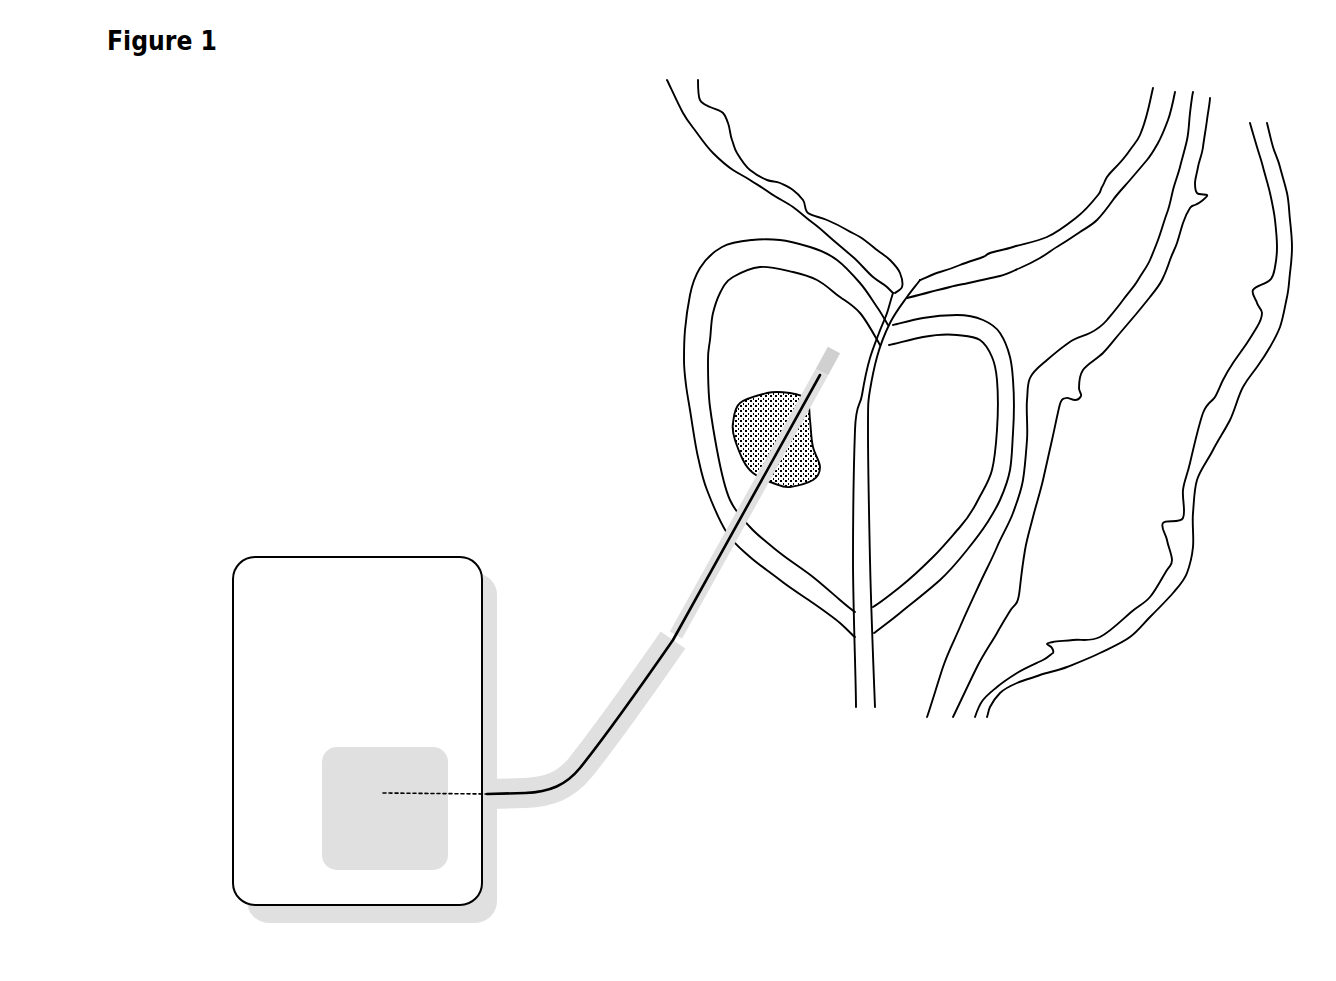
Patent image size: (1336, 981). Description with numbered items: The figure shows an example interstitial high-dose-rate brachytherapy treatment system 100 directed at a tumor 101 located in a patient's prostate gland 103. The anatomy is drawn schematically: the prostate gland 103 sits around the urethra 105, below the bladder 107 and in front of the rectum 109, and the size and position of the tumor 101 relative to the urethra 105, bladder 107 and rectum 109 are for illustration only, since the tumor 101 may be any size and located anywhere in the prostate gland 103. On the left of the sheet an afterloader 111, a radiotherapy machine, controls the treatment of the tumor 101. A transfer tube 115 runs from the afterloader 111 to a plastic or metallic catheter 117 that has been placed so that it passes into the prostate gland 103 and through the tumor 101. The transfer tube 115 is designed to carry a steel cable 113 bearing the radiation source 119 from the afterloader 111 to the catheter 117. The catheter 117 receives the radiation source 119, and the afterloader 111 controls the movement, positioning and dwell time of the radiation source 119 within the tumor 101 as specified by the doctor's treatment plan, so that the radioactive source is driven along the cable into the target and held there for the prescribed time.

The brachytherapy system 100 is at (233, 333).
The tumor 101 is at (742, 435).
The prostate gland 103 is at (761, 302).
The urethra 105 is at (911, 273).
The bladder 107 is at (921, 174).
The rectum 109 is at (1109, 404).
The afterloader 111 is at (365, 740).
The steel cable 113 is at (652, 701).
The transfer tube 115 is at (601, 799).
The catheter 117 is at (679, 553).
The radiation source 119 is at (802, 363).